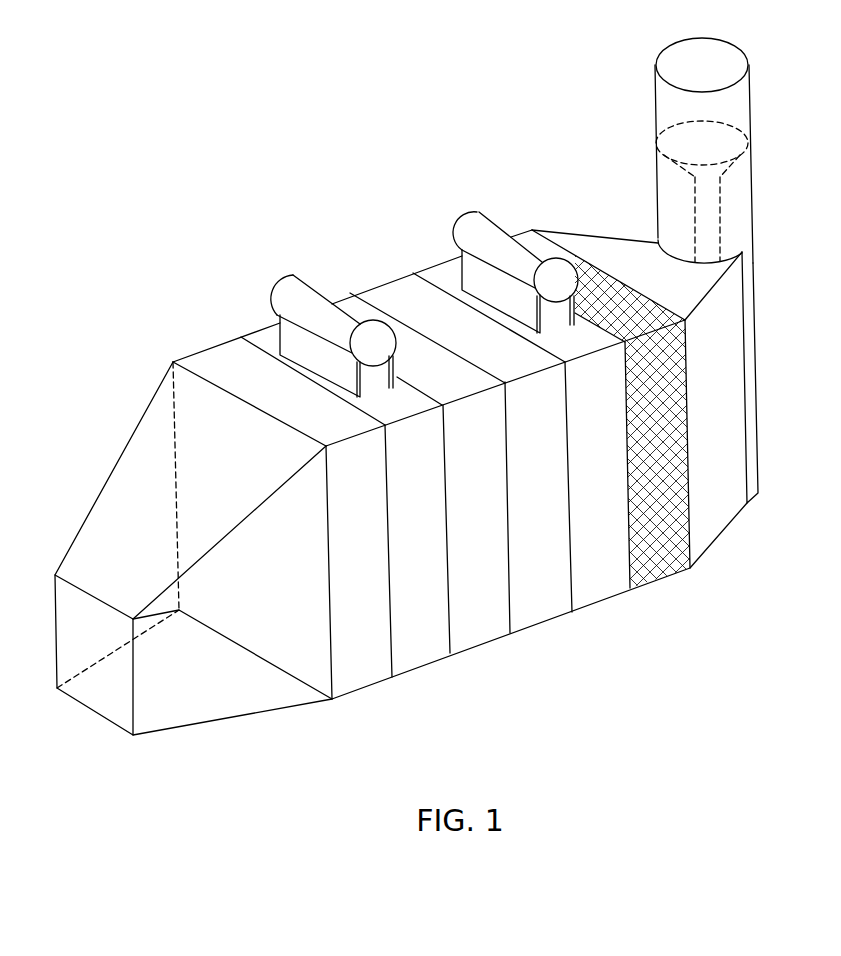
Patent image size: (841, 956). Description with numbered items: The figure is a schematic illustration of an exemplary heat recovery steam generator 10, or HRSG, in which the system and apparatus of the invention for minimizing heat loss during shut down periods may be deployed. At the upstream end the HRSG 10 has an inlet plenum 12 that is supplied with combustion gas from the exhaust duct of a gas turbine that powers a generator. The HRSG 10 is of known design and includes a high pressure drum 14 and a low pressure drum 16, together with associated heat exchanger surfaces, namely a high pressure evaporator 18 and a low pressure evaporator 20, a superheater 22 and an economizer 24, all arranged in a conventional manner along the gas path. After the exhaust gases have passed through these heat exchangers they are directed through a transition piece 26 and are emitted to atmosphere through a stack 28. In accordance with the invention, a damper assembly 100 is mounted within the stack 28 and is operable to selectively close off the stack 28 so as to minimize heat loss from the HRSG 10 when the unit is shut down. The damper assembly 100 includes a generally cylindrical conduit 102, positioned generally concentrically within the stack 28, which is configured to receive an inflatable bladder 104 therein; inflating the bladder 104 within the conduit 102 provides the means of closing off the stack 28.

The heat recovery steam generator 10 is at (288, 176).
The inlet plenum 12 is at (108, 520).
The high pressure drum 14 is at (298, 283).
The low pressure drum 16 is at (472, 223).
The high pressure evaporator 18 is at (428, 653).
The low pressure evaporator 20 is at (595, 590).
The superheater 22 is at (207, 355).
The economizer 24 is at (653, 563).
The transition piece 26 is at (717, 522).
The stack 28 is at (740, 95).
The damper assembly 100 is at (737, 205).
The conduit 102 is at (705, 227).
The inflatable bladder 104 is at (668, 143).